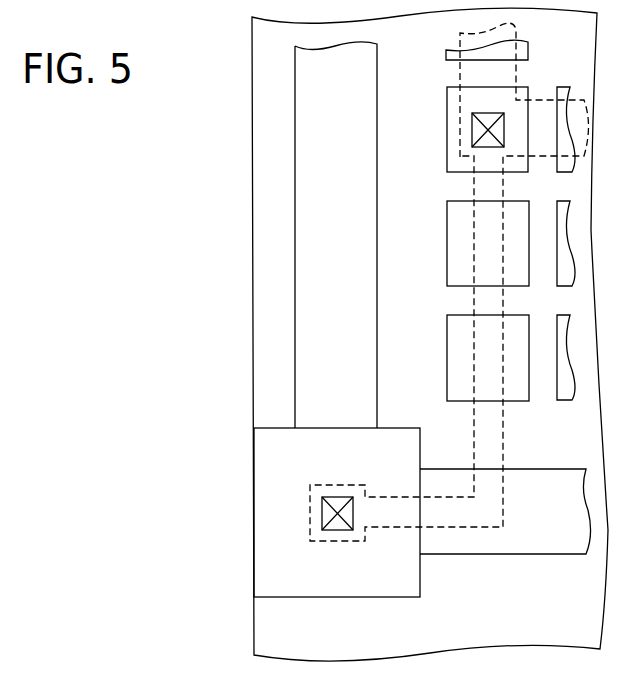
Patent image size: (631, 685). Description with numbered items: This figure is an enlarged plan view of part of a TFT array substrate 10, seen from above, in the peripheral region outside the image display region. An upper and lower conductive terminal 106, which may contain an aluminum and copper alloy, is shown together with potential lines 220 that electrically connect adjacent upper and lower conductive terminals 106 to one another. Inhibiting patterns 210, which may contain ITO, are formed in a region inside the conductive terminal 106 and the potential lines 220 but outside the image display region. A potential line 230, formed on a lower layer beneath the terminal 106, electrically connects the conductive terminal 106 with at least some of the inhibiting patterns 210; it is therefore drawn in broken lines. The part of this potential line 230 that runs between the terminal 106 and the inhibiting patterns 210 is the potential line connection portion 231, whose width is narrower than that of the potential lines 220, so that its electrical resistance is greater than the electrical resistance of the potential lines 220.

The TFT array substrate 10 is at (253, 345).
The upper and lower conductive terminal 106 is at (267, 467).
The inhibiting pattern 210 is at (447, 139).
The potential line 220 is at (308, 181).
The potential line 230 is at (537, 100).
The potential line connection portion 231 is at (487, 298).